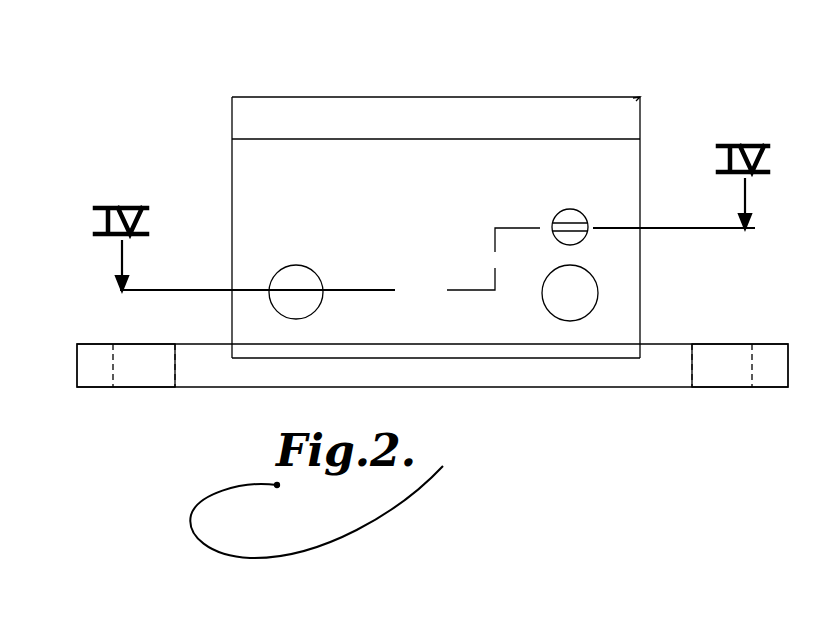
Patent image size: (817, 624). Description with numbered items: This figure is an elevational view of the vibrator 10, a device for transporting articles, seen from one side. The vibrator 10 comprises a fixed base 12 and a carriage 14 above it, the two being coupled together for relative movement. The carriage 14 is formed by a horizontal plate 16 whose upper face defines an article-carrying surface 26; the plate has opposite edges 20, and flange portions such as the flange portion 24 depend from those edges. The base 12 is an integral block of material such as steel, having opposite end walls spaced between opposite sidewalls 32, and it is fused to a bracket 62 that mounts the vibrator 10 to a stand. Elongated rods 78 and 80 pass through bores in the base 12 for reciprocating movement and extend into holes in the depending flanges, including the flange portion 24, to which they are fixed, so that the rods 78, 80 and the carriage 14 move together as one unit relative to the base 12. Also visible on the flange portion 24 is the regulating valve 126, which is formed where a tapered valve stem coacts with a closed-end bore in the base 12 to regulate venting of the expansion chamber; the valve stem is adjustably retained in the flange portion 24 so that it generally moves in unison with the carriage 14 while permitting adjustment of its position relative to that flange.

The vibrator 10 is at (176, 97).
The base 12 is at (283, 358).
The carriage 14 is at (232, 213).
The horizontal plate 16 is at (436, 97).
The opposite edges 20 is at (640, 97).
The flange portion 24 is at (632, 201).
The article-carrying surface 26 is at (318, 97).
The sidewalls 32 is at (232, 256).
The bracket 62 is at (188, 387).
The elongated rod 78 is at (585, 309).
The elongated rod 80 is at (312, 305).
The regulating valve 126 is at (578, 232).